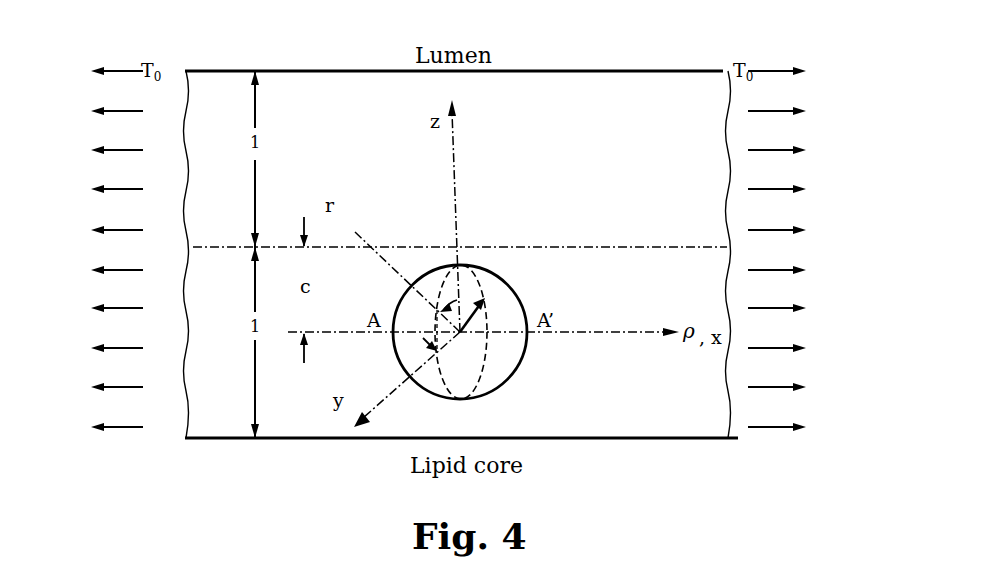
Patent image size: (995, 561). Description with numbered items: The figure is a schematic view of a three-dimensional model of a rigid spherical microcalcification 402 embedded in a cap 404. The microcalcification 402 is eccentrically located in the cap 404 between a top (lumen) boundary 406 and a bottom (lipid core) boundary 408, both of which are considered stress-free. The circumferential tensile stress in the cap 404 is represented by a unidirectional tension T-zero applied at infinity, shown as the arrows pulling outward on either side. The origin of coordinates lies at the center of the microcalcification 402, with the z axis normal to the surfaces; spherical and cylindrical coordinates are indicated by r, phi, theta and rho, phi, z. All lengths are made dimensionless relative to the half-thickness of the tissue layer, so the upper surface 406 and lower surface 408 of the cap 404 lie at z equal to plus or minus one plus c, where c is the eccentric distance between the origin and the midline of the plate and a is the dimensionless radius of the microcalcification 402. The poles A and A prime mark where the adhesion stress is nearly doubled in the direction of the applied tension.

The rigid spherical microcalcification 402 is at (534, 270).
The cap 404 is at (457, 254).
The top (lumen) boundary 406 is at (587, 70).
The bottom (core) boundary 408 is at (628, 439).